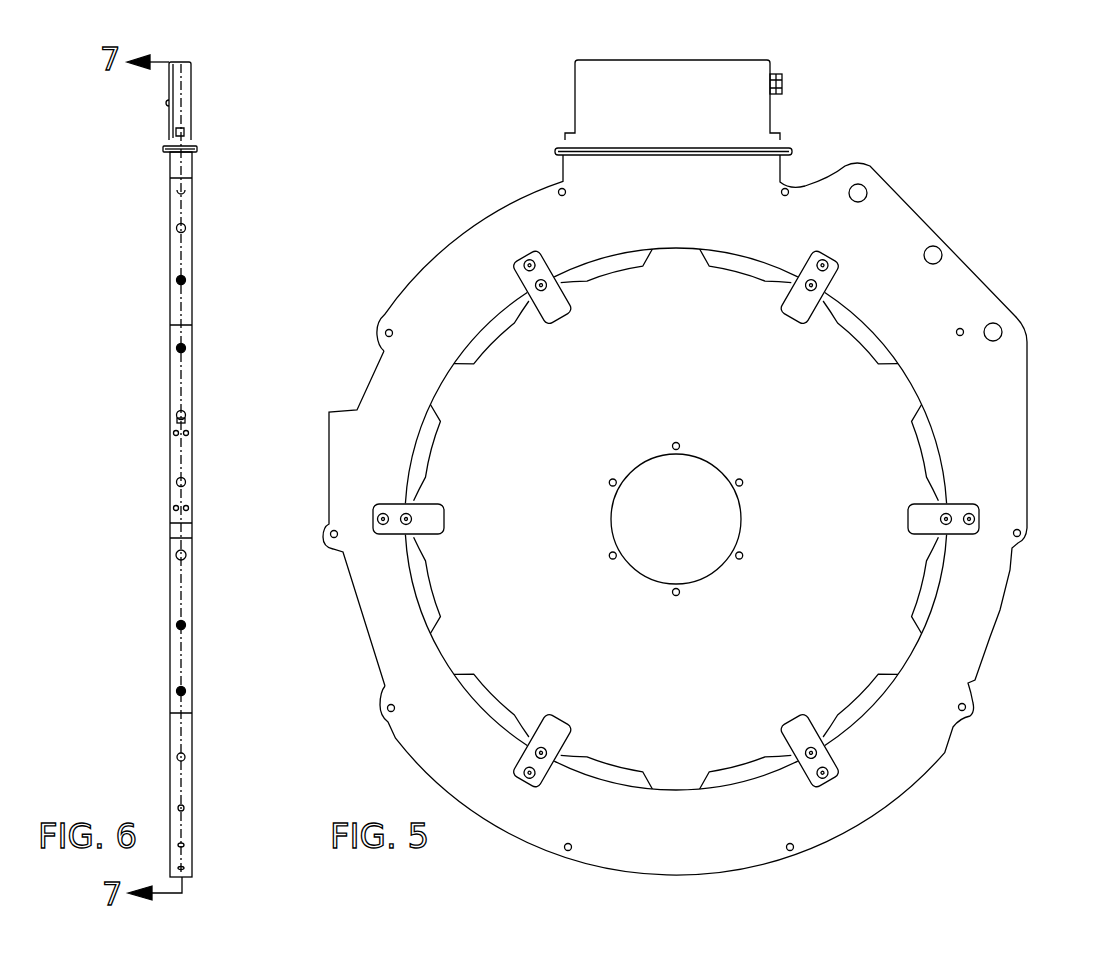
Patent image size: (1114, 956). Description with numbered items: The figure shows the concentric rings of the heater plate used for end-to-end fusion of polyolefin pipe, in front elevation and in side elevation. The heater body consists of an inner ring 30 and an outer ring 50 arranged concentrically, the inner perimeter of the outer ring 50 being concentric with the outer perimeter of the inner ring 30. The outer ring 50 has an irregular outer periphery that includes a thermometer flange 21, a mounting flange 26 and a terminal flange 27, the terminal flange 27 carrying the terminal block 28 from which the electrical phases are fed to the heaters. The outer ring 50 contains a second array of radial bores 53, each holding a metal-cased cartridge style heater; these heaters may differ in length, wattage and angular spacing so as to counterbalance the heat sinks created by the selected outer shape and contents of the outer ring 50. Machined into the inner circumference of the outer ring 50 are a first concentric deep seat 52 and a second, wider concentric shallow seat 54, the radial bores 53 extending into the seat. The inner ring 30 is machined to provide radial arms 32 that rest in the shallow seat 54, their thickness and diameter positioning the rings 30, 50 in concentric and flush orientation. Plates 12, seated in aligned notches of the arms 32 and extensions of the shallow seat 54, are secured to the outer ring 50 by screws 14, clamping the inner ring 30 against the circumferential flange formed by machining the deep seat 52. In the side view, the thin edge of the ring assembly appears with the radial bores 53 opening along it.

In FIG. 5, the plate 12 is at (566, 302).
In FIG. 5, the screw 14 is at (543, 281).
In FIG. 5, the thermometer flange 21 is at (346, 465).
In FIG. 6, the thermometer flange 21 is at (170, 467).
In FIG. 5, the mounting flange 26 is at (916, 213).
In FIG. 5, the terminal flange 27 is at (556, 156).
In FIG. 5, the terminal block 28 is at (603, 88).
In FIG. 5, the inner ring 30 is at (882, 436).
In FIG. 5, the radial arm 32 is at (903, 378).
In FIG. 5, the outer ring 50 is at (436, 273).
In FIG. 5, the deep seat 52 is at (481, 356).
In FIG. 6, the radial bore 53 is at (186, 348).
In FIG. 5, the shallow seat 54 is at (614, 254).